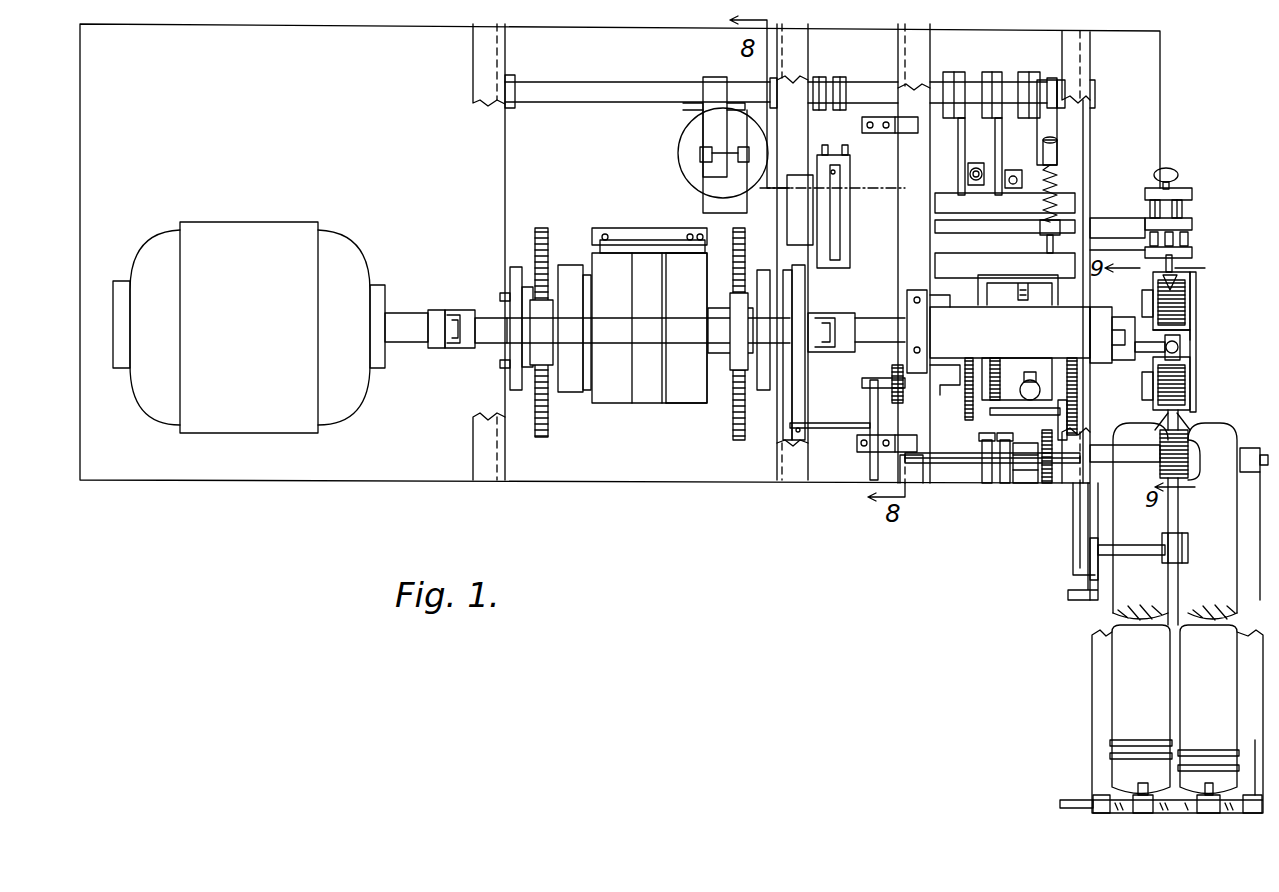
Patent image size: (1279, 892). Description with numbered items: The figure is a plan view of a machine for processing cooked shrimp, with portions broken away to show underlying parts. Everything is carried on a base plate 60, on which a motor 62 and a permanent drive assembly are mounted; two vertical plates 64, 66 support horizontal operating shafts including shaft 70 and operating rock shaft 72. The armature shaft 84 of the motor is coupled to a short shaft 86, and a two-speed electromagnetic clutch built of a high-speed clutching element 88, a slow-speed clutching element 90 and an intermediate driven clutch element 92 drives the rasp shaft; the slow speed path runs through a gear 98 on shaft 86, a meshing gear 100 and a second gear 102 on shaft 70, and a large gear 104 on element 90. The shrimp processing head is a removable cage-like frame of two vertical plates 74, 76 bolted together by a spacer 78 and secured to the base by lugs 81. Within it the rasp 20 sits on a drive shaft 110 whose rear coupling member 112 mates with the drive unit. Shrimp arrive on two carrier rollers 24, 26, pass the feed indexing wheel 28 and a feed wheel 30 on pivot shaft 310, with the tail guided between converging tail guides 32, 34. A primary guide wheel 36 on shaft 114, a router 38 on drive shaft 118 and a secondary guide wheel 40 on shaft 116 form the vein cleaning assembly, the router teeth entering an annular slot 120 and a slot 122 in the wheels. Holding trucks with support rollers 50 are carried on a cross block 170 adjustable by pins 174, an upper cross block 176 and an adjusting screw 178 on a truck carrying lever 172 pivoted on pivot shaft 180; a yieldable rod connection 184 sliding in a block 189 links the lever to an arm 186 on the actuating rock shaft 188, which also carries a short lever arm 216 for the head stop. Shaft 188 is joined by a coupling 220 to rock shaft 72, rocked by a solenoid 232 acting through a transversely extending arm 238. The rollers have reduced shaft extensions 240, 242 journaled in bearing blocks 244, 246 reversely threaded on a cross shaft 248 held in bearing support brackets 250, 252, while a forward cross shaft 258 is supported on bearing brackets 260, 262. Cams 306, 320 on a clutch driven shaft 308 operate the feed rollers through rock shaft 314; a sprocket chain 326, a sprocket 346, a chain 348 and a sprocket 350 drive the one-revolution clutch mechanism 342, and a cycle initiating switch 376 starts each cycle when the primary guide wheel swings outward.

The rasp 20 is at (1197, 350).
The shrimp carrier roller 24 is at (1190, 668).
The shrimp carrier roller 26 is at (1118, 642).
The feed indexing wheel 28 is at (1180, 553).
The feed wheel 30 is at (1203, 477).
The tail guide 32 is at (1190, 426).
The tail guide 34 is at (1160, 422).
The primary guide wheel 36 is at (1192, 394).
The router 38 is at (1192, 324).
The secondary guide wheel 40 is at (1192, 302).
The support rollers 50 is at (1164, 266).
The base plate 60 is at (402, 483).
The motor 62 is at (298, 228).
The vertical plate 64 is at (480, 86).
The vertical plate 66 is at (808, 62).
The operating shaft 70 is at (606, 322).
The operating rock shaft 72 is at (594, 88).
The vertical plate 74 is at (934, 62).
The vertical plate 76 is at (1095, 68).
The spacer 78 is at (957, 328).
The lugs 81 is at (877, 135).
The armature shaft 84 is at (399, 318).
The short shaft 86 is at (483, 318).
The high-speed clutching element 88 is at (612, 405).
The slow-speed clutching element 90 is at (690, 405).
The driven clutch element 92 is at (657, 405).
The gear 98 is at (535, 292).
The gear 100 is at (543, 228).
The second gear 102 is at (728, 363).
The large gear 104 is at (742, 440).
The drive shaft 110 is at (877, 320).
The coupling member 112 is at (850, 352).
The shaft 114 is at (1128, 392).
The shaft 116 is at (1140, 304).
The drive shaft 118 is at (1118, 326).
The annular slot 120 is at (1182, 368).
The slot 122 is at (1192, 286).
The cross block 170 is at (1193, 254).
The truck carrying lever 172 is at (1193, 226).
The pins 174 is at (1193, 197).
The cross block 176 is at (1182, 188).
The adjusting screw 178 is at (1167, 167).
The pivot shaft 180 is at (930, 270).
The yieldable rod connection 184 is at (1060, 186).
The arm 186 is at (1040, 130).
The actuating rock shaft 188 is at (875, 88).
The block 189 is at (1058, 152).
The short lever arm 216 is at (1052, 76).
The coupling 220 is at (818, 110).
The solenoid 232 is at (680, 185).
The transversely extending arm 238 is at (722, 130).
The reduced shaft extension 240 is at (1206, 780).
The reduced shaft extension 242 is at (1145, 783).
The bearing block 244 is at (1212, 800).
The bearing block 246 is at (1135, 800).
The cross shaft 248 is at (1080, 802).
The bearing support bracket 250 is at (1250, 765).
The bearing support bracket 252 is at (1100, 795).
The cross shaft 258 is at (1192, 478).
The bearing bracket 260 is at (1250, 447).
The bearing bracket 262 is at (1098, 480).
The cam 306 is at (984, 470).
The clutch driven shaft 308 is at (953, 465).
The pivot shaft 310 is at (1137, 463).
The rock shaft 314 is at (987, 420).
The cam 320 is at (1003, 472).
The sprocket chain 326 is at (1072, 360).
The one-revolution clutch mechanism 342 is at (1040, 465).
The sprocket 346 is at (1043, 362).
The chain 348 is at (1030, 465).
The sprocket 350 is at (1048, 485).
The cycle initiating switch 376 is at (845, 228).